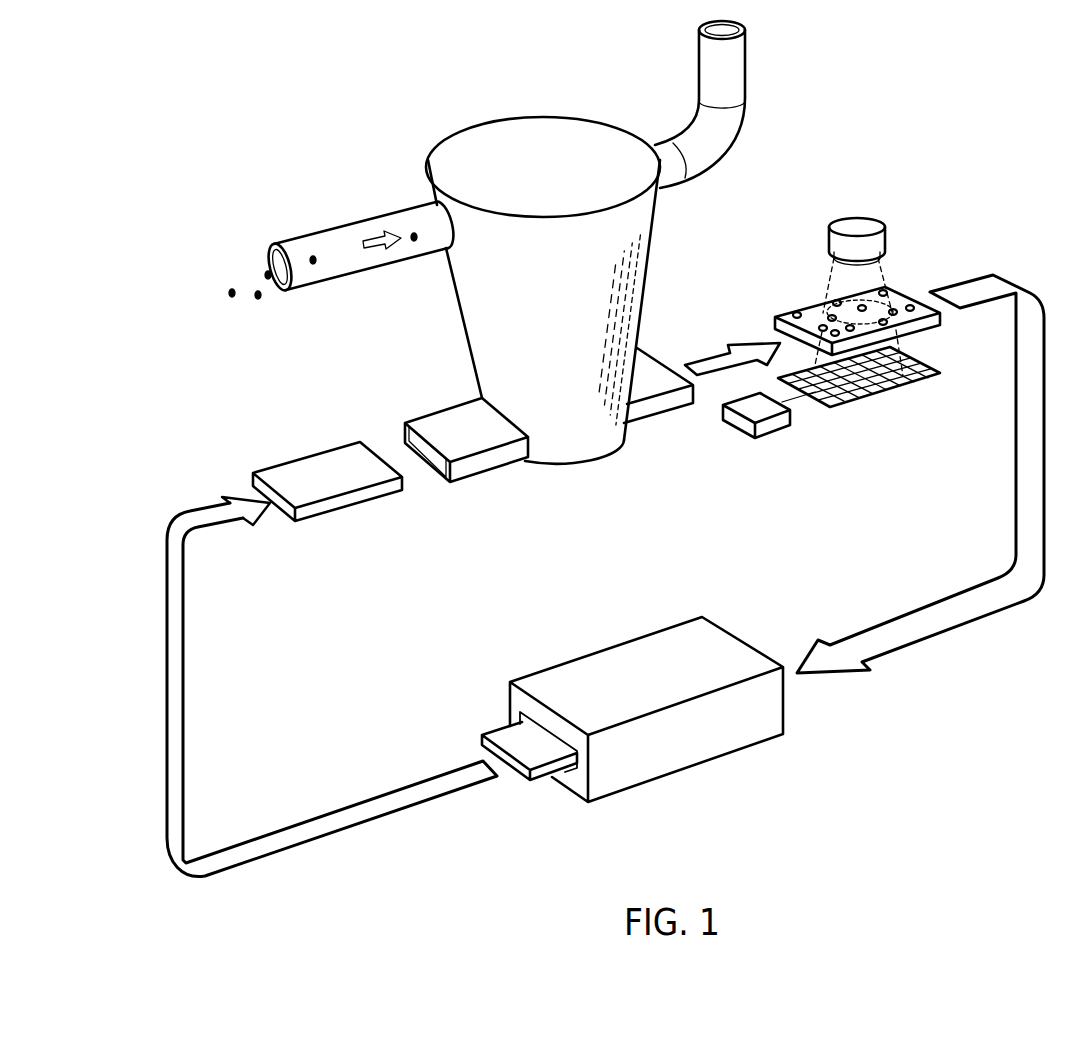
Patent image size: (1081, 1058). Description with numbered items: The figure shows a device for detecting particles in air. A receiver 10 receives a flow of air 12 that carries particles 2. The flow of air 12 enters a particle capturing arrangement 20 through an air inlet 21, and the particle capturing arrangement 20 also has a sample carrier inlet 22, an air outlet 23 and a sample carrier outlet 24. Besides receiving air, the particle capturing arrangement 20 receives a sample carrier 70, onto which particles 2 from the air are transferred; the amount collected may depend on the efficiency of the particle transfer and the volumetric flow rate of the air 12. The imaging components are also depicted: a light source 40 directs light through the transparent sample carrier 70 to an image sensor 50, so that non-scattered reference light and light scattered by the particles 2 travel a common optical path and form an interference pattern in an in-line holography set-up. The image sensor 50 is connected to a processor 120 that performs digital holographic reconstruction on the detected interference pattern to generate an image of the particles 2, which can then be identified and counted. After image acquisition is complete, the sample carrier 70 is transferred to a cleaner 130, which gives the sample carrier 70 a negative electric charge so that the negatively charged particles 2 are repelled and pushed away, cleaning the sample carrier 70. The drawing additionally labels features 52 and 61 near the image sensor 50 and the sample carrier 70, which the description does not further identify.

The particles 2 is at (258, 300).
The receiver 10 is at (272, 245).
The flow of air 12 is at (372, 251).
The particle capturing arrangement 20 is at (535, 100).
The air inlet 21 is at (418, 214).
The sample carrier inlet 22 is at (480, 444).
The air outlet 23 is at (705, 65).
The sample carrier outlet 24 is at (647, 383).
The light source 40 is at (870, 225).
The image sensor 50 is at (889, 410).
The grid cells 52 is at (860, 402).
The tray 61 is at (903, 303).
The sample carrier 70 is at (772, 312).
The processor 120 is at (762, 426).
The cleaner 130 is at (640, 667).